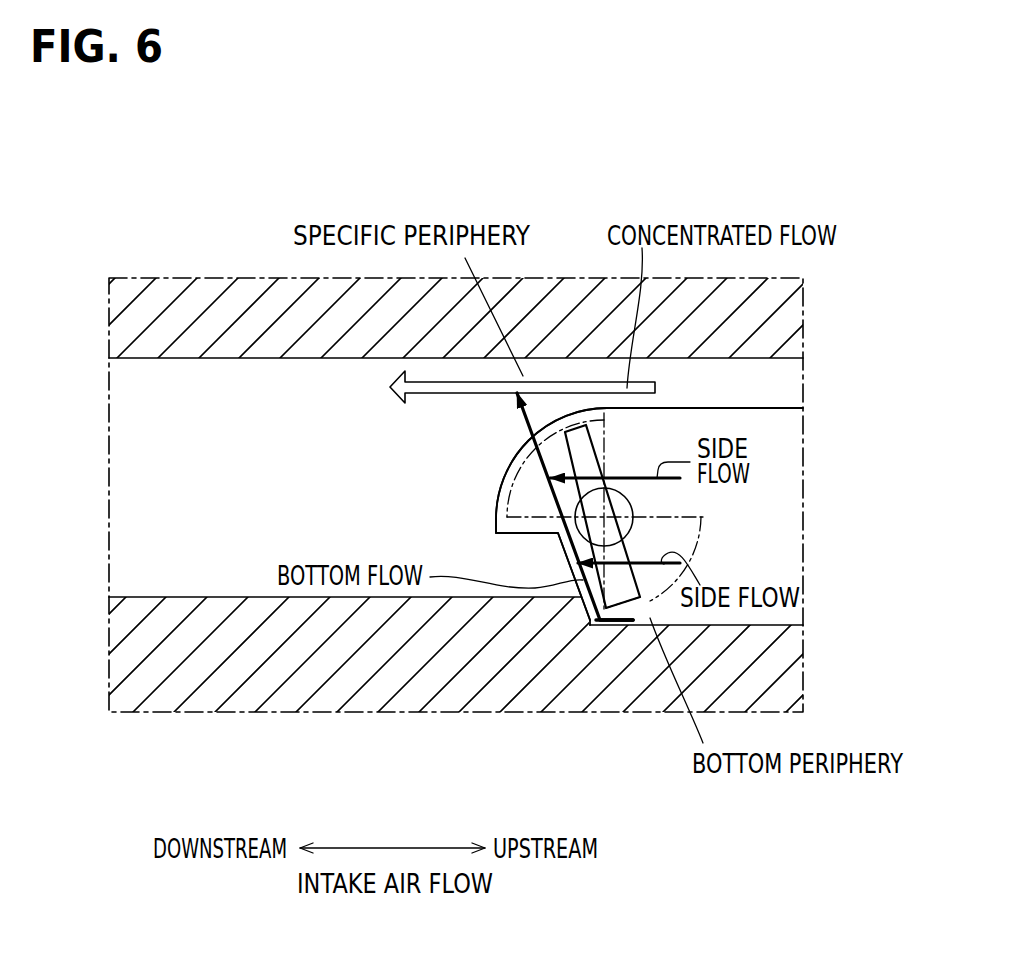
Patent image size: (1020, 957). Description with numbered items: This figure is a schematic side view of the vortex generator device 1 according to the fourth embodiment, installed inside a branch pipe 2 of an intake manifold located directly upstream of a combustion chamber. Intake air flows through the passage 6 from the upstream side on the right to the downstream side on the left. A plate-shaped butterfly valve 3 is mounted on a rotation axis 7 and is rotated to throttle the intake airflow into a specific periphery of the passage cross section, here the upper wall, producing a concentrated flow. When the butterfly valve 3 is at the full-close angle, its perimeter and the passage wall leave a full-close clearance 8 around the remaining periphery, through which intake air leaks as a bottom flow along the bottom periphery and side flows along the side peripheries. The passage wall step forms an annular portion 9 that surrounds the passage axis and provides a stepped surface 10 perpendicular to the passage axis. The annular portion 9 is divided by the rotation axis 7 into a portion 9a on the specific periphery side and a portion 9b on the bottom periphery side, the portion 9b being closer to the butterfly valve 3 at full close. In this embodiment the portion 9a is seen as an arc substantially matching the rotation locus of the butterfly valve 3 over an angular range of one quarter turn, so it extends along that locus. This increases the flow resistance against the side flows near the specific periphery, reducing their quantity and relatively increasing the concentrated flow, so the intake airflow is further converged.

The vortex generator device 1 is at (118, 238).
The branch pipe 2 is at (168, 690).
The butterfly valve 3 is at (642, 601).
The passage 6 is at (125, 478).
The rotation axis 7 is at (617, 508).
The full-close clearance 8 is at (642, 618).
The annular portion 9 is at (574, 516).
The portion on specific periphery side 9a is at (503, 473).
The portion on bottom periphery side 9b is at (573, 564).
The stepped surface 10 is at (570, 694).